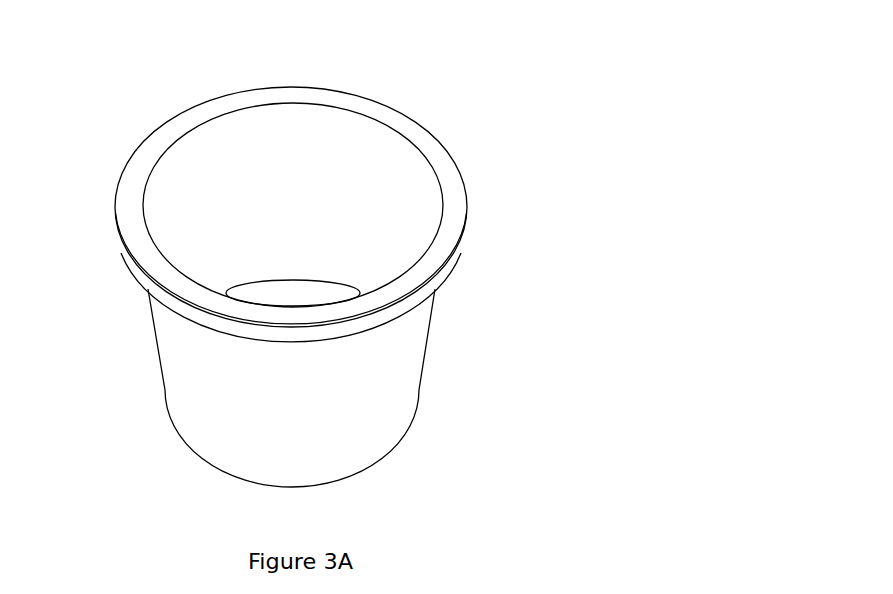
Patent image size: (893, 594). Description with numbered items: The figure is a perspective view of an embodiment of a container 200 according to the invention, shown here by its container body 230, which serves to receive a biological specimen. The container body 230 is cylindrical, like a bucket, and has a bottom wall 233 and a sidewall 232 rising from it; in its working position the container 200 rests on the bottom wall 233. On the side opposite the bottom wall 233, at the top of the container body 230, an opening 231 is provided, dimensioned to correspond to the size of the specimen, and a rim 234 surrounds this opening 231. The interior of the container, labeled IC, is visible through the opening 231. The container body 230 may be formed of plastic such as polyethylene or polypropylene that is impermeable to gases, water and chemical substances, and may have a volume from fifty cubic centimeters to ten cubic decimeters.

The container 200 is at (141, 56).
The container body 230 is at (384, 391).
The opening 231 is at (267, 162).
The sidewall 232 is at (183, 375).
The bottom wall 233 is at (267, 295).
The rim 234 is at (450, 197).